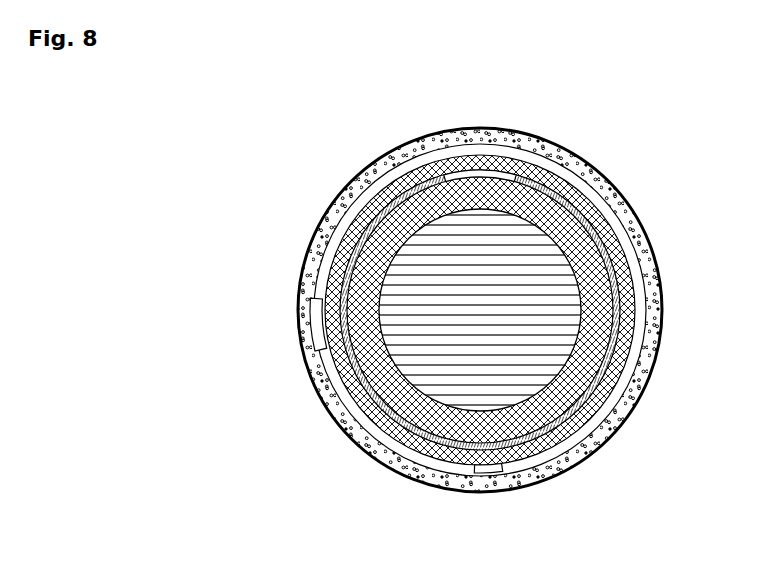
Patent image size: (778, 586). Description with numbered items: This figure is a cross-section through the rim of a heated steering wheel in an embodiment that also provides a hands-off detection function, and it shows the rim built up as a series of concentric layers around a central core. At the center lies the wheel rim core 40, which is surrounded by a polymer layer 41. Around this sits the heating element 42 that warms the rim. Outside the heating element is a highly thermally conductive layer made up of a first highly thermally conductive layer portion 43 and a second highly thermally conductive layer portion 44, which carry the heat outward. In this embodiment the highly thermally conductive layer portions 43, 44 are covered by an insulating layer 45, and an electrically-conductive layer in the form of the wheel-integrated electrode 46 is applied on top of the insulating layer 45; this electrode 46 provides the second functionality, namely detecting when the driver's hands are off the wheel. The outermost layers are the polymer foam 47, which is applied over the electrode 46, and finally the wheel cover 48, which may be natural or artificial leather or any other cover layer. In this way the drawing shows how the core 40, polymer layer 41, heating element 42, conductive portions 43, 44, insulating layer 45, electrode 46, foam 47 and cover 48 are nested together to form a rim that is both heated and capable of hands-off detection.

The wheel rim core 40 is at (492, 304).
The polymer layer 41 is at (593, 217).
The heating element 42 is at (387, 460).
The first highly thermally conductive layer portion 43 is at (329, 412).
The second highly thermally conductive layer portion 44 is at (475, 170).
The insulating layer 45 is at (352, 208).
The wheel-integrated electrode 46 is at (498, 150).
The polymer foam 47 is at (603, 420).
The wheel cover 48 is at (553, 477).